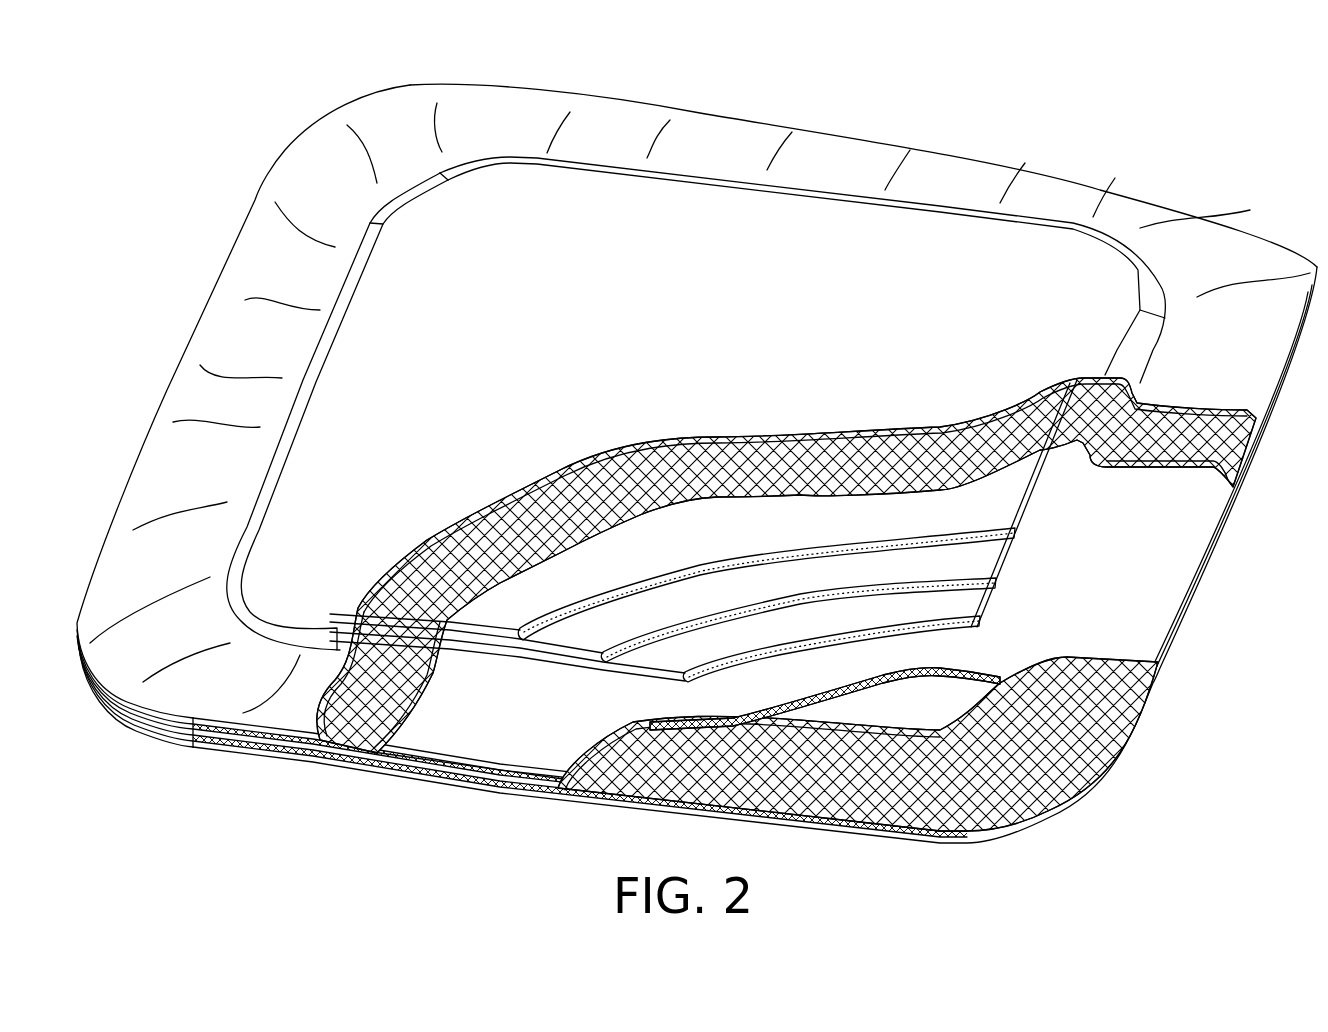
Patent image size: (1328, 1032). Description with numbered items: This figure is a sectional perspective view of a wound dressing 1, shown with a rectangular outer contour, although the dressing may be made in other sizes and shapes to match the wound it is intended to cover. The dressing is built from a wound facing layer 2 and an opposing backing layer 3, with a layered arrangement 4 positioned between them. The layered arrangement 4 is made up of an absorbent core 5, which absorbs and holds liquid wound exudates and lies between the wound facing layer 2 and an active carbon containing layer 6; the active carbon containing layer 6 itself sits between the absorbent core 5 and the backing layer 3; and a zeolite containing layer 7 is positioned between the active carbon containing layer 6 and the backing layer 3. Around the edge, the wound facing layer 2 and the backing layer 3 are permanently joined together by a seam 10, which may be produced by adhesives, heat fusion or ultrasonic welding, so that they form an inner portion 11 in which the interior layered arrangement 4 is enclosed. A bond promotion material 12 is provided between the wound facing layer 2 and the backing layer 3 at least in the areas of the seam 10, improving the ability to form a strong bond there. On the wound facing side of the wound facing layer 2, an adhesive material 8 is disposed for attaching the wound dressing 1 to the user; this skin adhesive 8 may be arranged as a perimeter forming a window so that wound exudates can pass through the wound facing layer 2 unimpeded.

The wound dressing 1 is at (1147, 88).
The wound facing layer 2 is at (500, 713).
The backing layer 3 is at (810, 248).
The layered arrangement 4 is at (911, 597).
The absorbent core 5 is at (955, 603).
The active carbon containing layer 6 is at (978, 558).
The zeolite containing layer 7 is at (990, 507).
The adhesive material 8 is at (860, 773).
The seam 10 is at (962, 172).
The inner portion 11 is at (1083, 470).
The bond promotion material 12 is at (1228, 447).